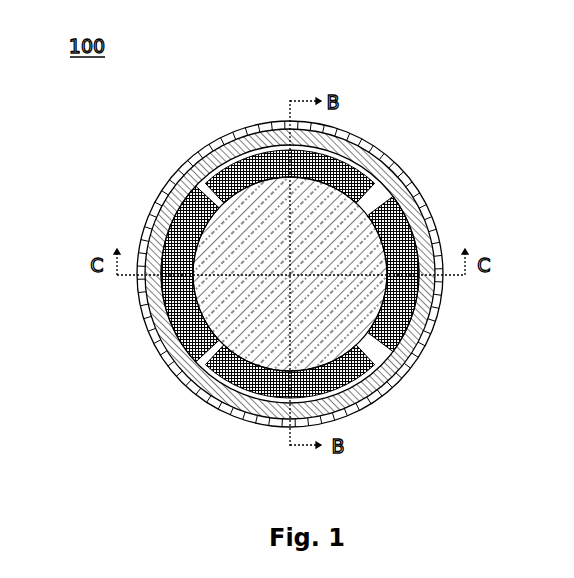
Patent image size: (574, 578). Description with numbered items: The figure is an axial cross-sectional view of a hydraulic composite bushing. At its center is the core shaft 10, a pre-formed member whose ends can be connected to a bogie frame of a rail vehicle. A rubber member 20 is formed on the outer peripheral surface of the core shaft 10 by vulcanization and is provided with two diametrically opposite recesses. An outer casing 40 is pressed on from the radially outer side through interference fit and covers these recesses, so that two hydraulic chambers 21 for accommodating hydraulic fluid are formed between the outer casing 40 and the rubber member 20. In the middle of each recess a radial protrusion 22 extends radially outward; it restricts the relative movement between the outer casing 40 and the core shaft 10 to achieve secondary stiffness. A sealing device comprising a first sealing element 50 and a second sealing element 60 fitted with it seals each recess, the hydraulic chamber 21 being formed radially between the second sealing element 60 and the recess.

The core shaft 10 is at (187, 393).
The rubber member 20 is at (284, 248).
The hydraulic chamber 21 is at (221, 165).
The radial protrusion 22 is at (258, 152).
The outer casing 40 is at (152, 330).
The first sealing element 50 is at (427, 230).
The second sealing element 60 is at (348, 152).